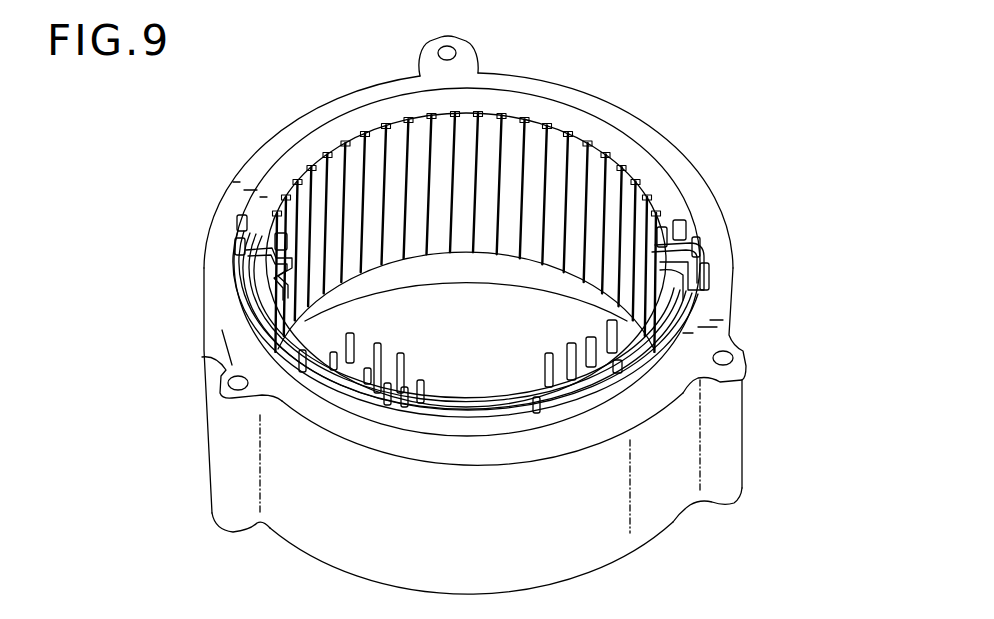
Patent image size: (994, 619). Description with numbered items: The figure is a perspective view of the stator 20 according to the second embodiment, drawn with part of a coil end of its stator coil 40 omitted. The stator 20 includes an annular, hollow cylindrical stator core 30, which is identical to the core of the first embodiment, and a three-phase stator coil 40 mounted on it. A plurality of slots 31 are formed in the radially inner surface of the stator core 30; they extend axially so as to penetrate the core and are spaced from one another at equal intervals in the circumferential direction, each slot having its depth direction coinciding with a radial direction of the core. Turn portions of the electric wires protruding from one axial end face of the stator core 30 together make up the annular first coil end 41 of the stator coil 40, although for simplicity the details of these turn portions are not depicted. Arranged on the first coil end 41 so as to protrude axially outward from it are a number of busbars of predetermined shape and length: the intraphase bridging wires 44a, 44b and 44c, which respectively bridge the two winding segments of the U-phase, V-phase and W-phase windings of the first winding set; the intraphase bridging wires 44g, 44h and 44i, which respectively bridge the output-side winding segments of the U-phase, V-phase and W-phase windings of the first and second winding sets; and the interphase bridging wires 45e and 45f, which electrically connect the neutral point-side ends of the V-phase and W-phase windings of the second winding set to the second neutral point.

The stator 20 is at (708, 125).
The stator core 30 is at (750, 410).
The slots 31 is at (378, 170).
The stator coil 40 is at (703, 223).
The first coil end 41 is at (315, 135).
The intraphase bridging wire 44a is at (680, 318).
The intraphase bridging wire 44b is at (484, 388).
The intraphase bridging wire 44c is at (262, 335).
The intraphase bridging wire 44g is at (681, 335).
The intraphase bridging wire 44h is at (462, 420).
The intraphase bridging wire 44i is at (246, 300).
The interphase bridging wire 45e is at (583, 360).
The interphase bridging wire 45f is at (387, 368).